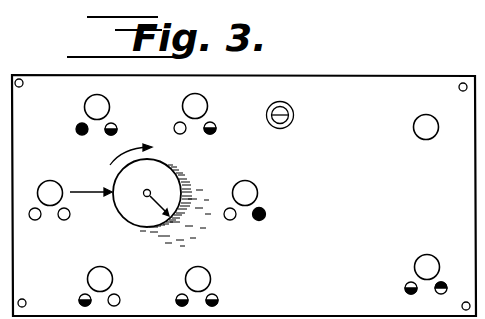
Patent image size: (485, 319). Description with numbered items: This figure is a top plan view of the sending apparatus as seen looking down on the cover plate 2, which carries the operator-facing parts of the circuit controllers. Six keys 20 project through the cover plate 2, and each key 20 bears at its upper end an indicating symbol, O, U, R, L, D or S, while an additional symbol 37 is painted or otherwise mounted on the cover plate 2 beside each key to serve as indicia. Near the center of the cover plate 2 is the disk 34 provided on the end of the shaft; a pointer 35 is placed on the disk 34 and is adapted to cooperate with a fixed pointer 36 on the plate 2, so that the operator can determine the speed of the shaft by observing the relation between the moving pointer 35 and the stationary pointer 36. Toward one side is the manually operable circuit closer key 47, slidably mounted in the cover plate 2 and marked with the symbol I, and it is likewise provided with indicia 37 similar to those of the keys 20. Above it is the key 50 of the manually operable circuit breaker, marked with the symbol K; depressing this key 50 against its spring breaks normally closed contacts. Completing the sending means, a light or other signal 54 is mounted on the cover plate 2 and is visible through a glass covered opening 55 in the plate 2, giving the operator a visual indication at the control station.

The cover plate 2 is at (244, 195).
The keys 20 is at (84, 104).
The symbol 37 is at (109, 135).
The disk 34 is at (160, 195).
The pointer 35 is at (153, 201).
The pointer 36 is at (90, 196).
The signal 54 is at (284, 125).
The glass covered opening 55 is at (284, 104).
The key 50 is at (421, 140).
The key 47 is at (421, 255).